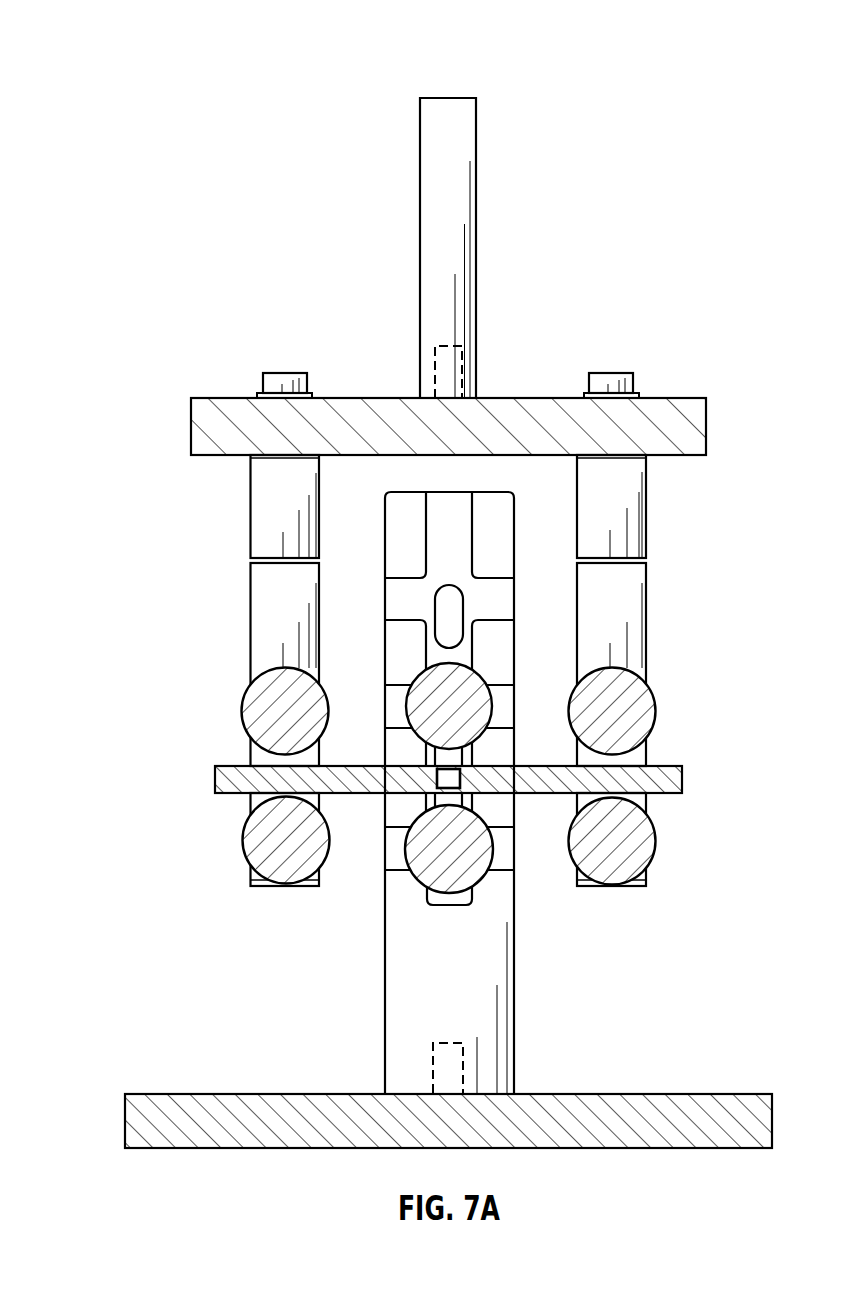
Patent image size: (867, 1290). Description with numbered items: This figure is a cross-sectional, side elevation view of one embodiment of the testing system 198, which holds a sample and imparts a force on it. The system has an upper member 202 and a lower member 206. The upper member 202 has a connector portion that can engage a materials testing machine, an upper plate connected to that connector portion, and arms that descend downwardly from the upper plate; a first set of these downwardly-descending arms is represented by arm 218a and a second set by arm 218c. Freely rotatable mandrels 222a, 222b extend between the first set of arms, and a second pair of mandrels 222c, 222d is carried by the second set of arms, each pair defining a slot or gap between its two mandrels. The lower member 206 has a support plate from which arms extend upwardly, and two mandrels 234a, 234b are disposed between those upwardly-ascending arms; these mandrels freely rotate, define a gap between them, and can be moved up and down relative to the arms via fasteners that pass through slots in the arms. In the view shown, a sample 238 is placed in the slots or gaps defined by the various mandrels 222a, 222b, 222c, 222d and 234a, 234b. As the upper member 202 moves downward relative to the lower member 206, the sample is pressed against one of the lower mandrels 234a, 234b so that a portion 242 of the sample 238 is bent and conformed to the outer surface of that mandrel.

The testing system 198 is at (719, 61).
The upper member 202 is at (188, 141).
The lower member 206 is at (152, 1035).
The arm 218a is at (257, 513).
The arm 218c is at (634, 508).
The mandrel 222a is at (248, 702).
The mandrel 222b is at (247, 845).
The mandrel 222c is at (643, 696).
The mandrel 222d is at (634, 845).
The mandrel 234a is at (473, 703).
The mandrel 234b is at (428, 877).
The sample 238 is at (675, 783).
The portion of the sample 242 is at (462, 778).